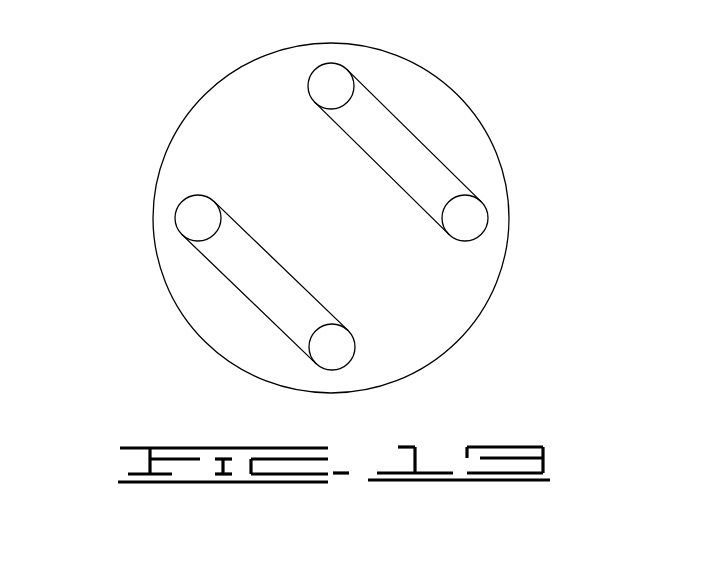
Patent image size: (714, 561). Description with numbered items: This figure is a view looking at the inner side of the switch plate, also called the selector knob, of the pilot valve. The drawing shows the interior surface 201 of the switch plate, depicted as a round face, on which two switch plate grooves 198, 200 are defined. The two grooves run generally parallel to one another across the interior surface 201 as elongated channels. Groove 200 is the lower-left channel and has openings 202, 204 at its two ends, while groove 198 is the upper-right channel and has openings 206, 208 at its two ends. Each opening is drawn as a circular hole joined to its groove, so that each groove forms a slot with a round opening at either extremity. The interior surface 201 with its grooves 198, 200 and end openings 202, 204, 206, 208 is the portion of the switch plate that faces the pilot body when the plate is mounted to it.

The switch plate groove 198 is at (443, 162).
The switch plate groove 200 is at (266, 316).
The interior surface 201 is at (235, 113).
The opening 202 is at (200, 220).
The opening 204 is at (337, 360).
The opening 206 is at (340, 77).
The opening 208 is at (478, 217).